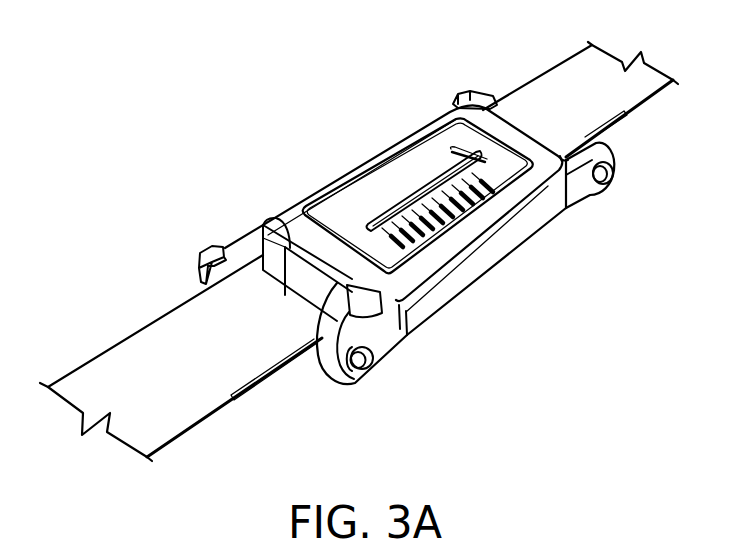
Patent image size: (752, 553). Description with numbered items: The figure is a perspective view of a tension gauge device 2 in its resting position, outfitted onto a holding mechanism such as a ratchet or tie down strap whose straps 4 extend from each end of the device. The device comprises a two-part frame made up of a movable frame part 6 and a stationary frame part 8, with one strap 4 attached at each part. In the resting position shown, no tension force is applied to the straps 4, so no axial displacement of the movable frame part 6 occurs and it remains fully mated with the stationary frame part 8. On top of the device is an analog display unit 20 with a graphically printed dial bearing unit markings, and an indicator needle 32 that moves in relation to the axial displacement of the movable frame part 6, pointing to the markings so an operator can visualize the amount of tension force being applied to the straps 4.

The tension gauge device 2 is at (364, 238).
The straps 4 is at (182, 408).
The movable frame part 6 is at (385, 333).
The stationary frame part 8 is at (578, 182).
The analog display unit 20 is at (428, 226).
The indicator needle 32 is at (487, 160).